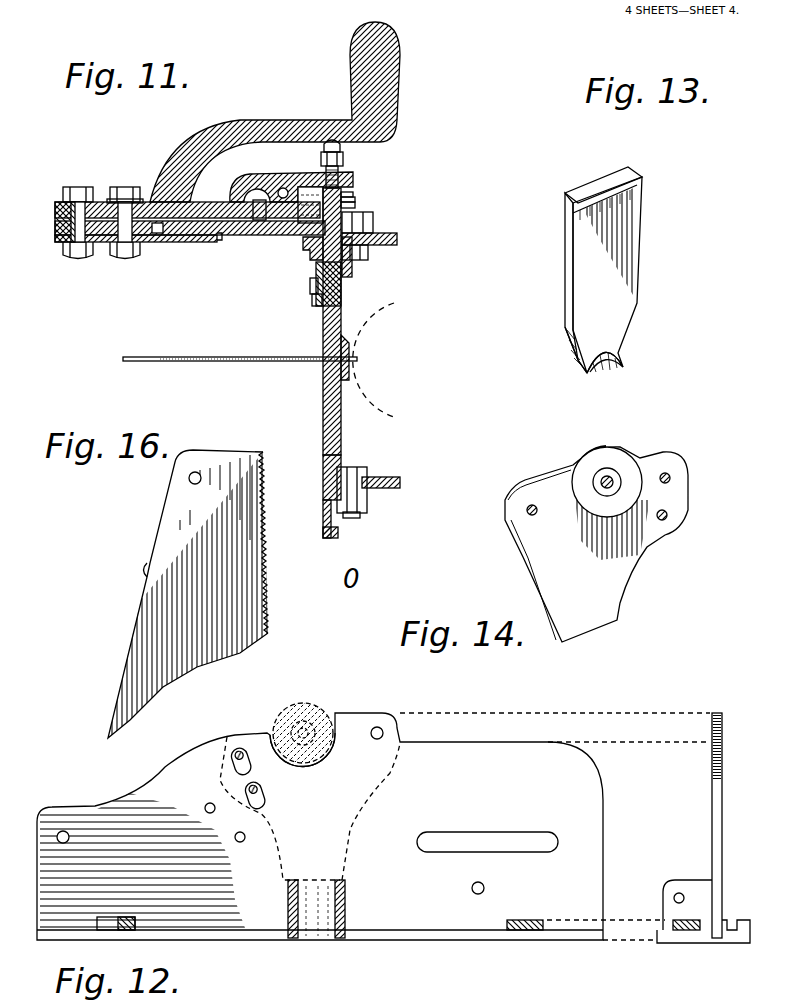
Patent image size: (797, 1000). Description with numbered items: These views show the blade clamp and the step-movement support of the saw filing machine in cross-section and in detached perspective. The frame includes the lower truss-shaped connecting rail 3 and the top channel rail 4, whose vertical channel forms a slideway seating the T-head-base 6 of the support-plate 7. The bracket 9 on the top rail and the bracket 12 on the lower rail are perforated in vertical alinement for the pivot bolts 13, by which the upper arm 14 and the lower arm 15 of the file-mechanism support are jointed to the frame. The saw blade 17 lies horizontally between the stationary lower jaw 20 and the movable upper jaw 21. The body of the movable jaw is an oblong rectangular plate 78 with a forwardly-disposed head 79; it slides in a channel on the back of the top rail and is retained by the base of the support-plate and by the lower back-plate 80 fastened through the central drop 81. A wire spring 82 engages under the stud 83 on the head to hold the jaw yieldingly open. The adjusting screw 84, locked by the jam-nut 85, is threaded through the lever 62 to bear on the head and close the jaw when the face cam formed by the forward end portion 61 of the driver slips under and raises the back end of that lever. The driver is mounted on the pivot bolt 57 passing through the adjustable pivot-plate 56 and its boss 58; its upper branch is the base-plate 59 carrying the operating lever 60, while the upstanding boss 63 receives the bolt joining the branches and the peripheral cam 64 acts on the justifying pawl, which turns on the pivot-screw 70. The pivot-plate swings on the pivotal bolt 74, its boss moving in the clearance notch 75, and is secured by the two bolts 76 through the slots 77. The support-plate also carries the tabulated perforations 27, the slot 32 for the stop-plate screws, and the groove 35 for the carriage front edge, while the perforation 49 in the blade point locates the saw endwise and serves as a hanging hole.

In FIG. 11, the lower truss-shaped connecting rail 3 is at (323, 501).
In FIG. 11, the top channel rail 4 is at (355, 210).
In FIG. 11, the T-head-base 6 is at (316, 258).
In FIG. 12, the T-head-base 6 is at (455, 935).
In FIG. 11, the support-plate 7 is at (226, 241).
In FIG. 12, the support-plate 7 is at (196, 835).
In FIG. 11, the bracket 9 is at (375, 222).
In FIG. 11, the bracket 12 is at (368, 493).
In FIG. 11, the pivot bolts 13 is at (376, 234).
In FIG. 11, the upper arm 14 is at (399, 240).
In FIG. 11, the lower arm 15 is at (399, 482).
In FIG. 11, the saw blade 17 is at (234, 363).
In FIG. 16, the saw blade 17 is at (147, 612).
In FIG. 11, the stationary lower jaw 20 is at (352, 373).
In FIG. 11, the movable upper jaw 21 is at (350, 346).
In FIG. 13, the movable upper jaw 21 is at (628, 369).
In FIG. 12, the perforations 27 is at (518, 784).
In FIG. 12, the slot 32 is at (546, 852).
In FIG. 11, the groove 35 is at (301, 252).
In FIG. 16, the perforation 49 is at (189, 478).
In FIG. 11, the pivot-plate 56 is at (108, 214).
In FIG. 14, the pivot-plate 56 is at (596, 544).
In FIG. 11, the pivot bolt 57 is at (128, 188).
In FIG. 11, the boss 58 is at (148, 234).
In FIG. 14, the boss 58 is at (619, 470).
In FIG. 12, the boss 58 is at (305, 720).
In FIG. 11, the base-plate 59 is at (144, 206).
In FIG. 11, the operating lever 60 is at (305, 126).
In FIG. 11, the forward end portion 61 is at (258, 222).
In FIG. 11, the lever 62 is at (266, 178).
In FIG. 11, the boss 63 is at (60, 222).
In FIG. 11, the peripheral cam 64 is at (218, 240).
In FIG. 12, the pivot-screw 70 is at (193, 803).
In FIG. 14, the pivotal bolt 74 is at (542, 525).
In FIG. 12, the pivotal bolt 74 is at (377, 740).
In FIG. 12, the clearance notch 75 is at (304, 768).
In FIG. 14, the bolts 76 is at (669, 513).
In FIG. 12, the slots 77 is at (246, 793).
In FIG. 11, the oblong rectangular plate 78 is at (313, 286).
In FIG. 13, the oblong rectangular plate 78 is at (603, 270).
In FIG. 11, the head 79 is at (349, 196).
In FIG. 13, the head 79 is at (641, 187).
In FIG. 11, the lower back-plate 80 is at (318, 304).
In FIG. 11, the central drop 81 is at (343, 294).
In FIG. 11, the wire spring 82 is at (351, 206).
In FIG. 11, the stud 83 is at (350, 201).
In FIG. 11, the adjusting screw 84 is at (341, 146).
In FIG. 11, the jam-nut 85 is at (344, 161).